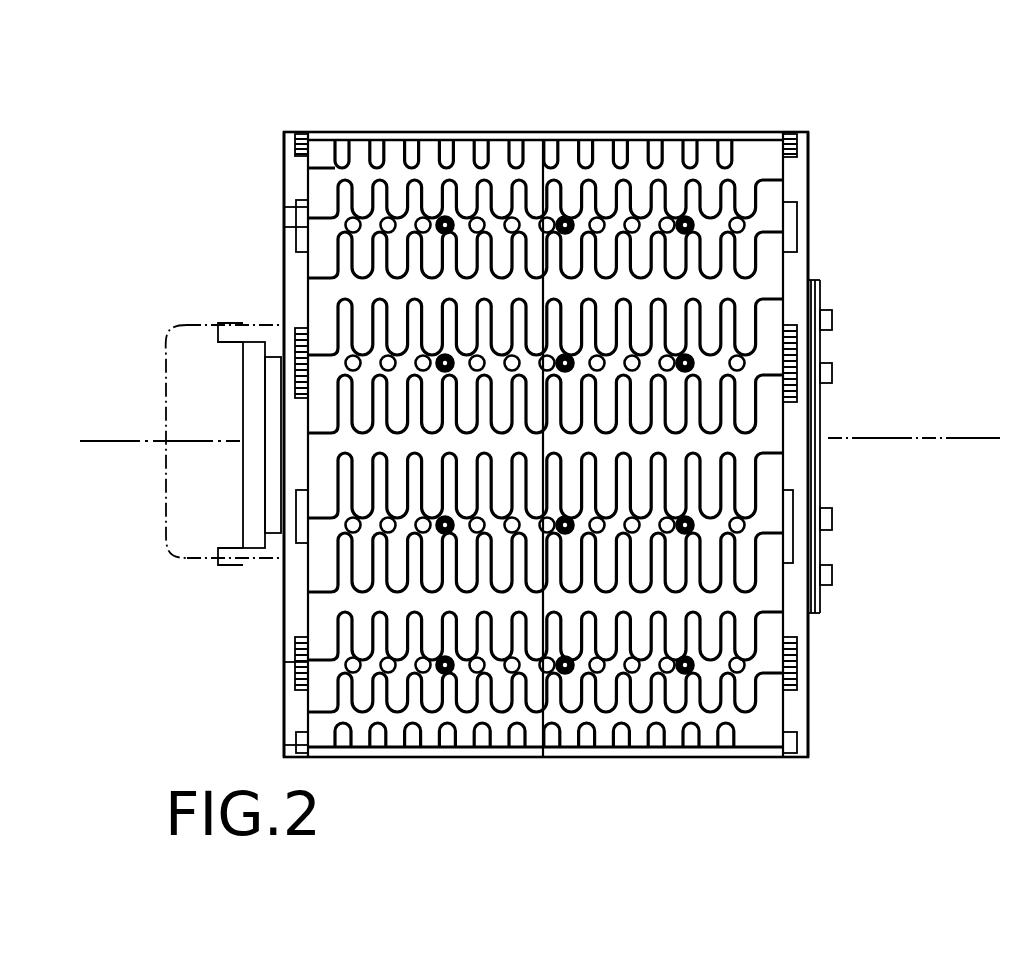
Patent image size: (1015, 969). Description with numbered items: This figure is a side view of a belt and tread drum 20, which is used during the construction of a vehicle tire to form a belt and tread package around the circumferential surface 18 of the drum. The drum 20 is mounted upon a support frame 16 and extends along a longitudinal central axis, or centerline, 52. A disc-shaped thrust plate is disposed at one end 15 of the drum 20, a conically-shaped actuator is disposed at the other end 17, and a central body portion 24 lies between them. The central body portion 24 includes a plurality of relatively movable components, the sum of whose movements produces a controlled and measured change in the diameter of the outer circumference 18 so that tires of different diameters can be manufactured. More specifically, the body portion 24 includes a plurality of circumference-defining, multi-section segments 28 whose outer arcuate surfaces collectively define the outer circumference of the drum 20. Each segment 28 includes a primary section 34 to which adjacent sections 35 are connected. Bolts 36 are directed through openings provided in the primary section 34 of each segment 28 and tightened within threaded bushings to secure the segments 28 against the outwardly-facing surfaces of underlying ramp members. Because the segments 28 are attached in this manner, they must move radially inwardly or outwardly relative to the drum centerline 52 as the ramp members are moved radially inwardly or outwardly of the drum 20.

The one end of the drum 15 is at (284, 132).
The support frame 16 is at (172, 577).
The other end of the drum 17 is at (813, 133).
The circumferential surface 18 is at (580, 135).
The belt and tread drum 20 is at (768, 87).
The central body portion 24 is at (543, 145).
The circumference-defining segment 28 is at (560, 431).
The primary section 34 is at (328, 252).
The adjacent section 35 is at (327, 195).
The bolt 36 is at (445, 215).
The longitudinal central axis 52 is at (942, 436).